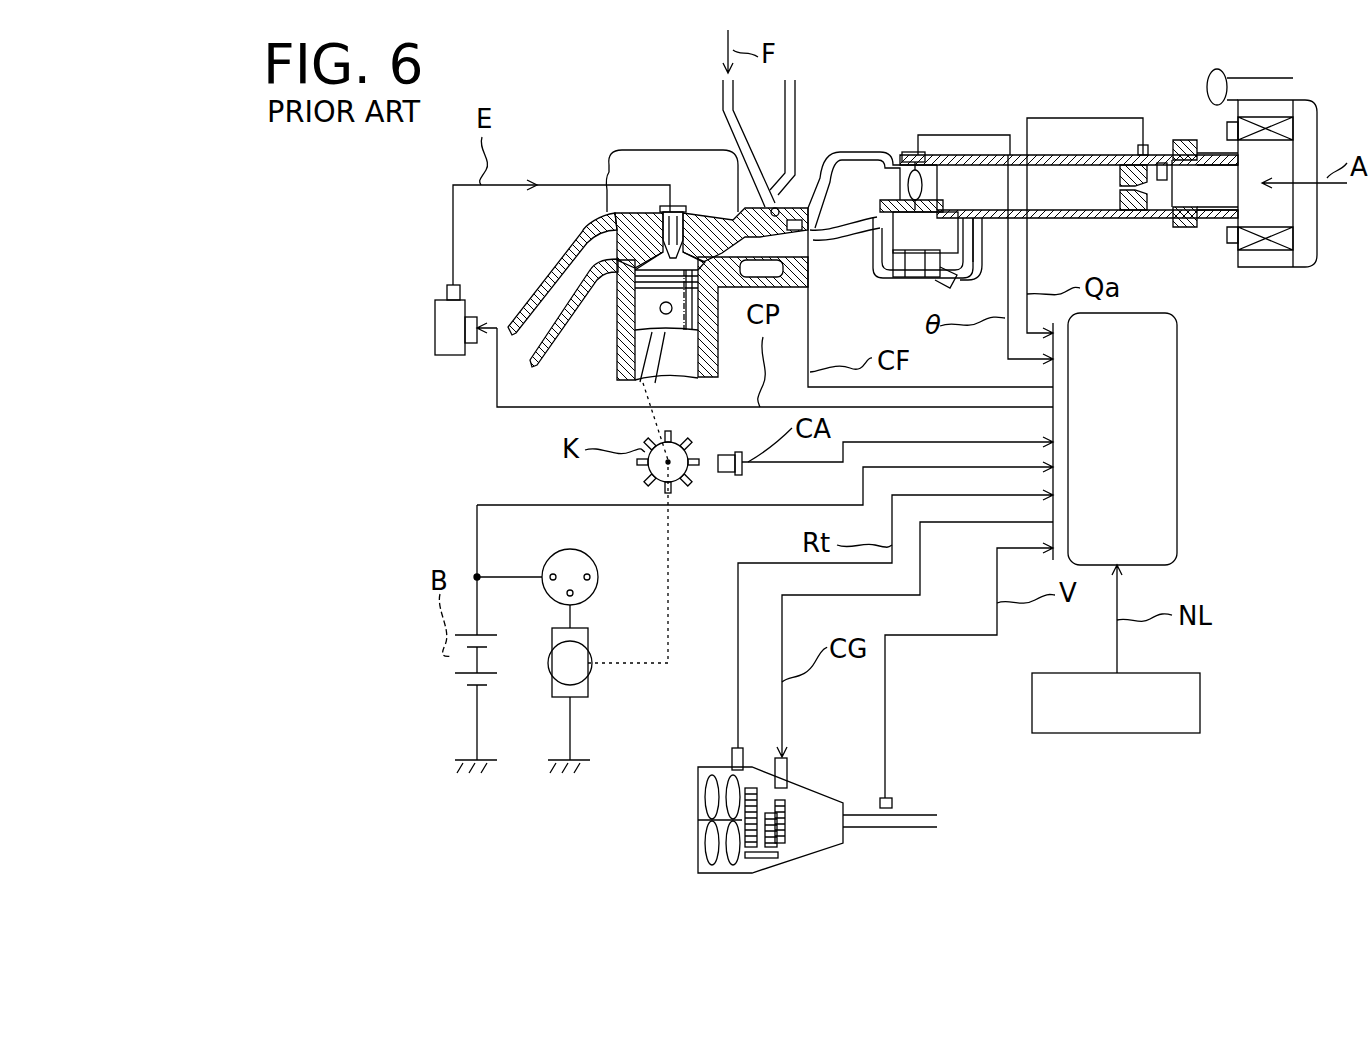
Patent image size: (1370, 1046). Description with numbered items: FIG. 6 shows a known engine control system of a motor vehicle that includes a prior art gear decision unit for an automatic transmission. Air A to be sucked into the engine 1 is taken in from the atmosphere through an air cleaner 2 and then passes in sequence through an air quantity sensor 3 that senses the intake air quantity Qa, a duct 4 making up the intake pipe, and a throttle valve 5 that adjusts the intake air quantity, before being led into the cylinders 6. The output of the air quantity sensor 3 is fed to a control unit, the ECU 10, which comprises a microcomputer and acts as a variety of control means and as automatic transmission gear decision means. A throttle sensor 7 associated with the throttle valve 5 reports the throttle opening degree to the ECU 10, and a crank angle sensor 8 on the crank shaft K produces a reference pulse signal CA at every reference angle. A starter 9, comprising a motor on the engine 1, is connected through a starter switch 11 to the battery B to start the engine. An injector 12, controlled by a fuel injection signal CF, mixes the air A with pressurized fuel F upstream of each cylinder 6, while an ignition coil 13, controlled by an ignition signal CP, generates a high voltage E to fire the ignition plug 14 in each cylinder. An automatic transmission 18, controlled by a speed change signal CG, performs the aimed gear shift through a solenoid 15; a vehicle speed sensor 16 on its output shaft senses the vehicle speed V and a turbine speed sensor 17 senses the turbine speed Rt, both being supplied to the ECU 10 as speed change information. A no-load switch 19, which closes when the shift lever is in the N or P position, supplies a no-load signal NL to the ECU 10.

The engine 1 is at (615, 352).
The air cleaner 2 is at (1265, 268).
The air quantity sensor 3 is at (1162, 220).
The duct 4 is at (1062, 220).
The throttle valve 5 is at (917, 202).
The cylinders 6 is at (652, 212).
The throttle sensor 7 is at (912, 152).
The crank angle sensor 8 is at (740, 470).
The starter 9 is at (548, 663).
The control unit (ECU) 10 is at (1177, 477).
The starter switch 11 is at (597, 587).
The injector 12 is at (789, 197).
The ignition coil 13 is at (447, 357).
The ignition plug 14 is at (684, 212).
The solenoid 15 is at (787, 763).
The vehicle speed sensor 16 is at (893, 805).
The turbine speed sensor 17 is at (730, 762).
The automatic transmission 18 is at (808, 853).
The no-load switch 19 is at (1180, 735).